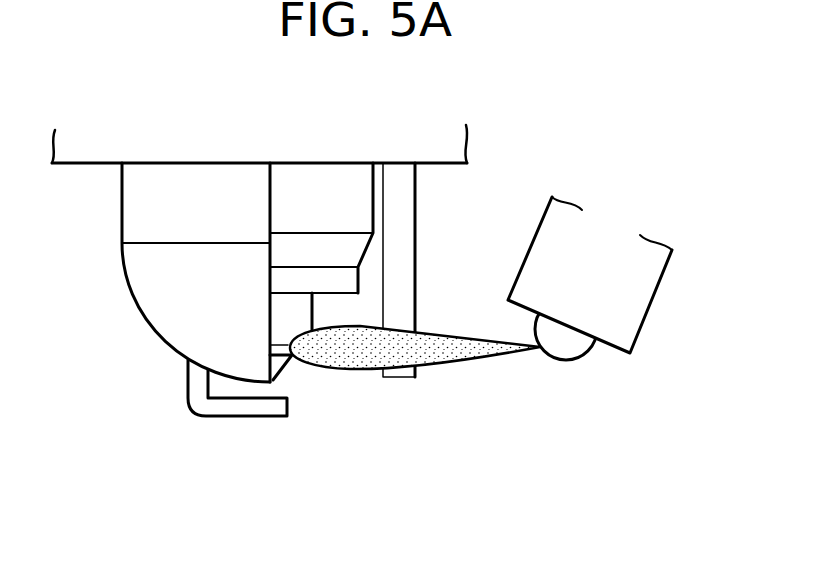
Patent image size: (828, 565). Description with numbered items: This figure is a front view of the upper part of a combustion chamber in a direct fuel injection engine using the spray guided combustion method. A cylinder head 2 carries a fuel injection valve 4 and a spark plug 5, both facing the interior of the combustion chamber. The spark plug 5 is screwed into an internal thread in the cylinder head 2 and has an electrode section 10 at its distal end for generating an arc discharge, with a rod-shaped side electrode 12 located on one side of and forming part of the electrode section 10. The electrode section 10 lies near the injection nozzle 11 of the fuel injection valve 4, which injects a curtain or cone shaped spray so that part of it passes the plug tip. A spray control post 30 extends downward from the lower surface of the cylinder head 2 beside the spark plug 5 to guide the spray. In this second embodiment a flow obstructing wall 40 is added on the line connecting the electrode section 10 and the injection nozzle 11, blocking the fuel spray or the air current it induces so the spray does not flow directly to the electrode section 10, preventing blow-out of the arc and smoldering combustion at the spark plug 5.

The cylinder head 2 is at (80, 168).
The spark plug 5 is at (325, 177).
The flow obstructing wall 40 is at (404, 209).
The fuel injection valve 4 is at (655, 298).
The injection nozzle 11 is at (541, 350).
The electrode section 10 is at (290, 383).
The side electrode 12 is at (188, 396).
The spray control post 30 is at (134, 301).